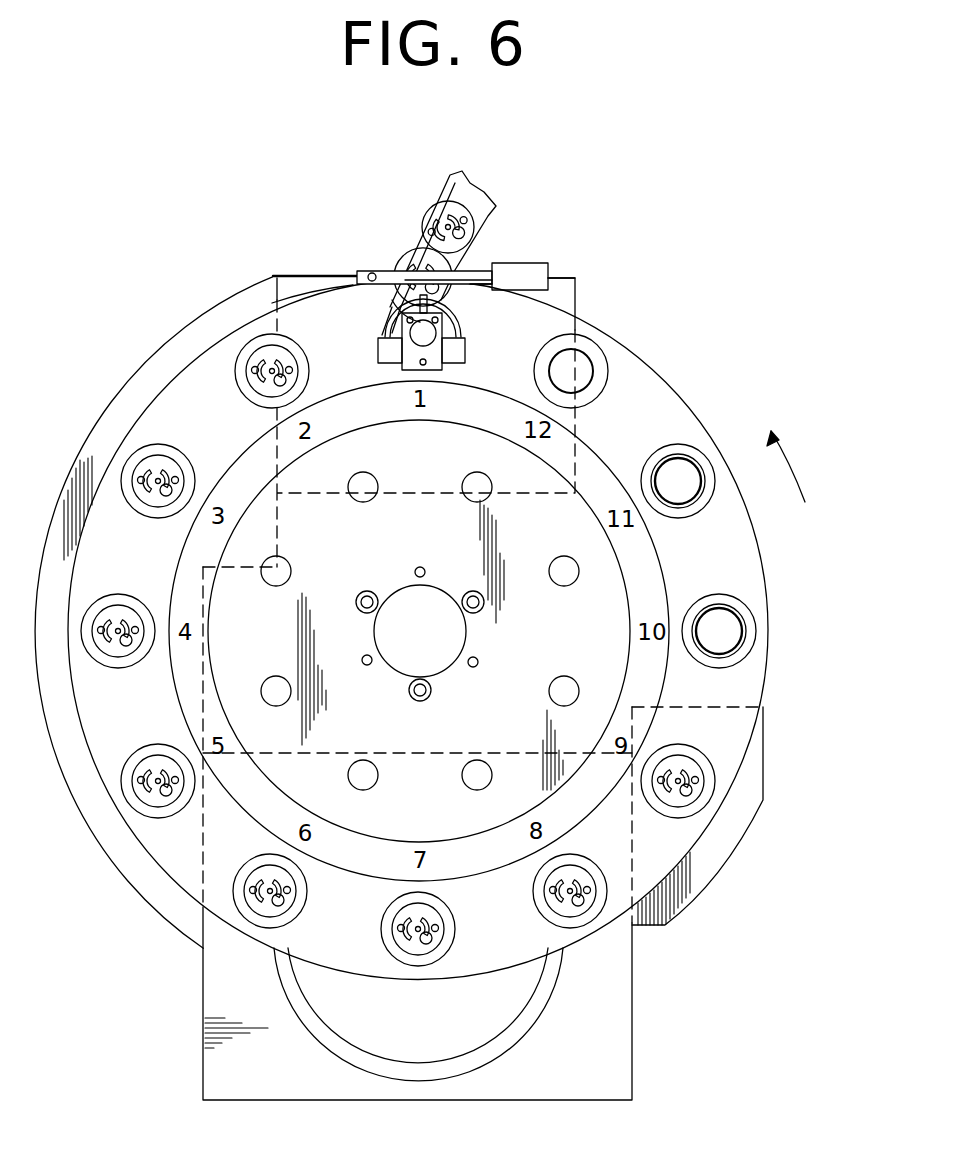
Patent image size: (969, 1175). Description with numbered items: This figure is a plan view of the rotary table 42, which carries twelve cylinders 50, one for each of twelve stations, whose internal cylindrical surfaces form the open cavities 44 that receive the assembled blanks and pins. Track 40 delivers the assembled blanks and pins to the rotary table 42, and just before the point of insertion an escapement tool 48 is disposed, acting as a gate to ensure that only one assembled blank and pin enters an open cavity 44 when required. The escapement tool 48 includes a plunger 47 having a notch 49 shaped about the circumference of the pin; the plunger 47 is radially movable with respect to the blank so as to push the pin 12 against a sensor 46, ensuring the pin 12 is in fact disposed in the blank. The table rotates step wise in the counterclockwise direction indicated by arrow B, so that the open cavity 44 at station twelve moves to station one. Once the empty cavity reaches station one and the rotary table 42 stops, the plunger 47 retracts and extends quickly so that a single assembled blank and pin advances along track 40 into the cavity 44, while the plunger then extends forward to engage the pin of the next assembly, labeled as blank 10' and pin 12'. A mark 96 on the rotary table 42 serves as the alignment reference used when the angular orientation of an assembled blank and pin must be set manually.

The blank 10' is at (439, 215).
The pin 12' is at (479, 192).
The pin 12 is at (385, 250).
The track 40 is at (430, 218).
The rotary table 42 is at (746, 564).
The open cavity 44 is at (592, 366).
The sensor 46 is at (386, 285).
The plunger 47 is at (473, 263).
The escapement tool 48 is at (482, 285).
The notch 49 is at (396, 274).
The cylinder 50 is at (608, 383).
The mark 96 is at (228, 918).
The arrow B is at (791, 466).